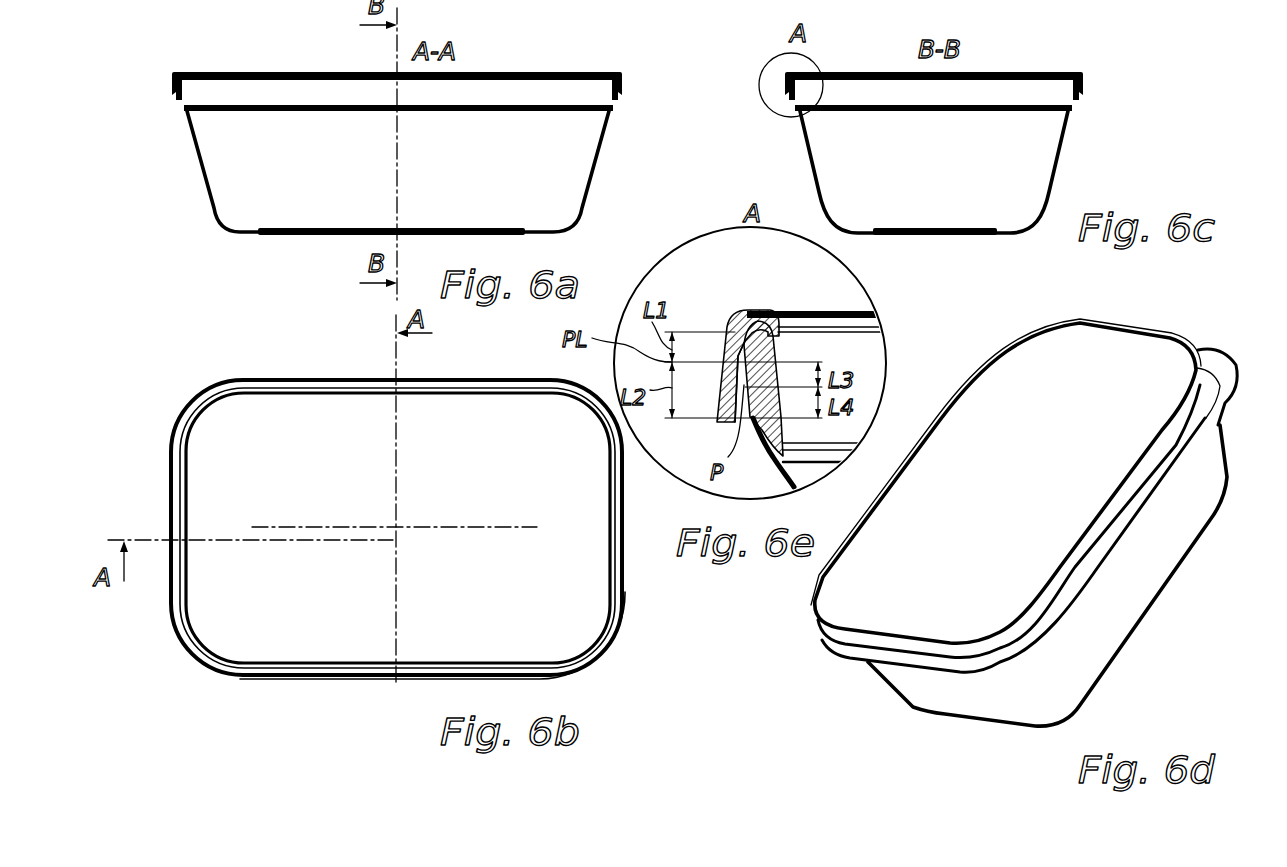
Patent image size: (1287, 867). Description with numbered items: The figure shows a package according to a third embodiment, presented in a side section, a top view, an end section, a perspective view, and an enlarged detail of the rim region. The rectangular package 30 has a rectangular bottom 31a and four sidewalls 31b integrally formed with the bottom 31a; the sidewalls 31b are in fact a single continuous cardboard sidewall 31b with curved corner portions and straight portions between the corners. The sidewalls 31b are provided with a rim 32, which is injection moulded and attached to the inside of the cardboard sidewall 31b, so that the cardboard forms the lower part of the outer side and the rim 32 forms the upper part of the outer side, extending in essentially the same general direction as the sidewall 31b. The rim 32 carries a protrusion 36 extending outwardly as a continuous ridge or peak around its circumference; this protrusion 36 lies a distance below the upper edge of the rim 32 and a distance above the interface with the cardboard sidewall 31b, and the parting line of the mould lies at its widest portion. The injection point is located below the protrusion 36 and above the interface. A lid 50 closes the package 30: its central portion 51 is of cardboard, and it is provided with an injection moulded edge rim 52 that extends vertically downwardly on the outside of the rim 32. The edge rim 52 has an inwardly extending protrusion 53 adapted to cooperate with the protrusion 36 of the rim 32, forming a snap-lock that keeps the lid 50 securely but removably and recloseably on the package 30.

In FIG. 6A, the rectangular package 30 is at (634, 66).
In FIG. 6A, the rectangular bottom 31a is at (548, 243).
In FIG. 6A, the sidewall 31b is at (597, 172).
In FIG. 6A, the rim 32 is at (598, 110).
In FIG. 6E, the protrusion 36 is at (740, 360).
In FIG. 6D, the lid 50 is at (1069, 372).
In FIG. 6D, the central portion 51 is at (1128, 362).
In FIG. 6E, the edge rim 52 is at (717, 412).
In FIG. 6D, the edge rim 52 is at (1163, 334).
In FIG. 6E, the inwardly extending protrusion 53 is at (740, 398).